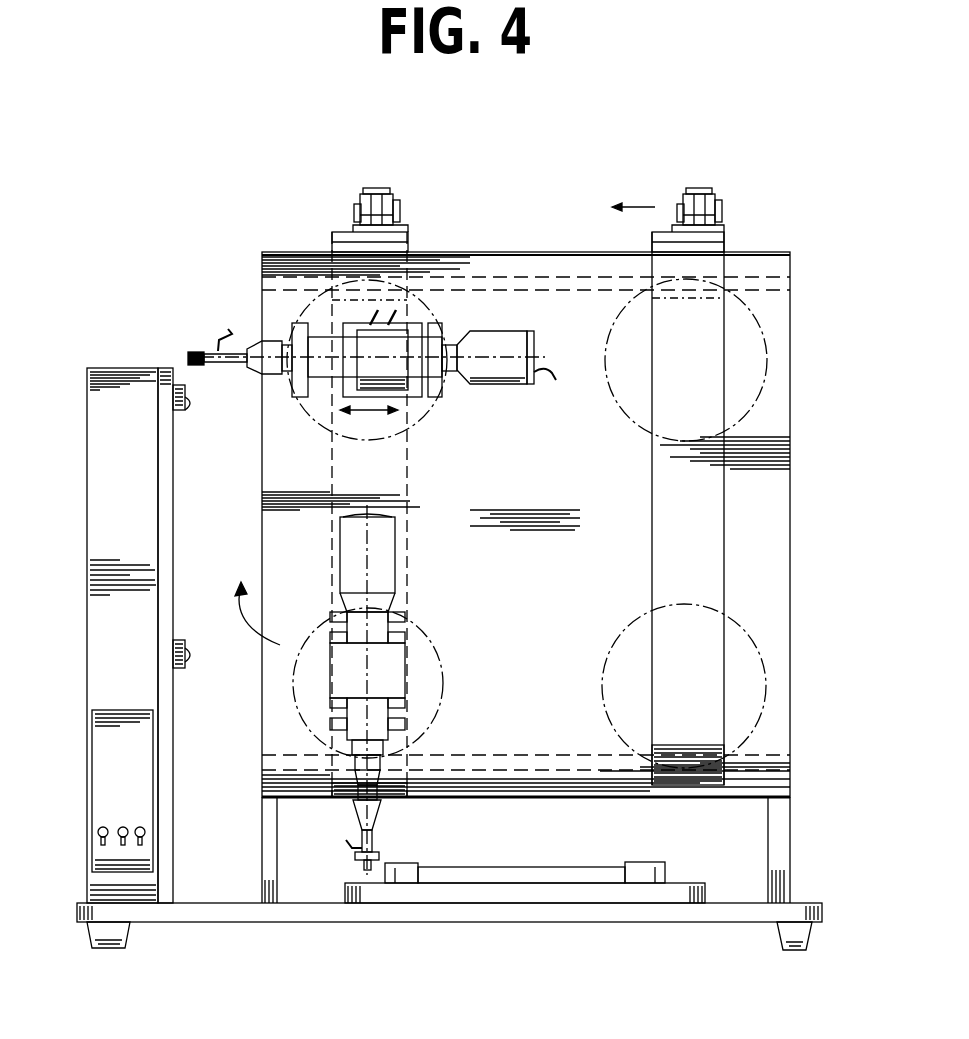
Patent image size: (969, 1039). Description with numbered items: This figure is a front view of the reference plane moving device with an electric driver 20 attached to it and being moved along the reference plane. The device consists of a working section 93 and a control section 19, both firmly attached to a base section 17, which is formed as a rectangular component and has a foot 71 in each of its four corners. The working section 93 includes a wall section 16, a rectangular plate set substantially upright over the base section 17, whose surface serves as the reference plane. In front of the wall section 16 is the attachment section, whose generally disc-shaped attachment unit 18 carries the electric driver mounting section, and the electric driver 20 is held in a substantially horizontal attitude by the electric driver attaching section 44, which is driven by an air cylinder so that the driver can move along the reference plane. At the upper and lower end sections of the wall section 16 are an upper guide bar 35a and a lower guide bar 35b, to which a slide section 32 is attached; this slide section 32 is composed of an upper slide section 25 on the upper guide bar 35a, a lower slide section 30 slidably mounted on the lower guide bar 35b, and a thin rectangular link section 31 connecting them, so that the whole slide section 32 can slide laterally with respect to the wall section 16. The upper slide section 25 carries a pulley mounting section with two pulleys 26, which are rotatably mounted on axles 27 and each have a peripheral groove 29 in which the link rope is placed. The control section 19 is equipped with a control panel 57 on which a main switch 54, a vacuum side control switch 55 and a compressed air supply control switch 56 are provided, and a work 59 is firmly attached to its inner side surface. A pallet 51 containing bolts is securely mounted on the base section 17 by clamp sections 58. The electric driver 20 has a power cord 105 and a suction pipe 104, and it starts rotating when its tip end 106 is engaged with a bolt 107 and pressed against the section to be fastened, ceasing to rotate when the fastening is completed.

The wall section 16 is at (790, 540).
The base section 17 is at (312, 903).
The attachment unit 18 is at (421, 424).
The control section 19 is at (87, 411).
The electric driver 20 is at (506, 386).
The upper slide section 25 is at (402, 226).
The pulleys 26 is at (362, 207).
The axles 27 is at (357, 212).
The peripheral groove 29 is at (378, 190).
The lower slide section 30 is at (406, 798).
The link section 31 is at (724, 500).
The slide section 32 is at (363, 184).
The upper guide bar 35a is at (548, 277).
The lower guide bar 35b is at (549, 757).
The electric driver attaching section 44 is at (418, 327).
The pallet 51 is at (548, 883).
The main switch 54 is at (103, 838).
The vacuum side control switch 55 is at (124, 842).
The compressed air supply control switch 56 is at (142, 836).
The control panel 57 is at (142, 780).
The clamp sections 58 is at (400, 863).
The work 59 is at (186, 654).
The foot 71 is at (108, 950).
The working section 93 is at (791, 300).
The suction pipe 104 is at (230, 340).
The power cord 105 is at (550, 382).
The tip end 106 is at (235, 366).
The bolt 107 is at (192, 350).